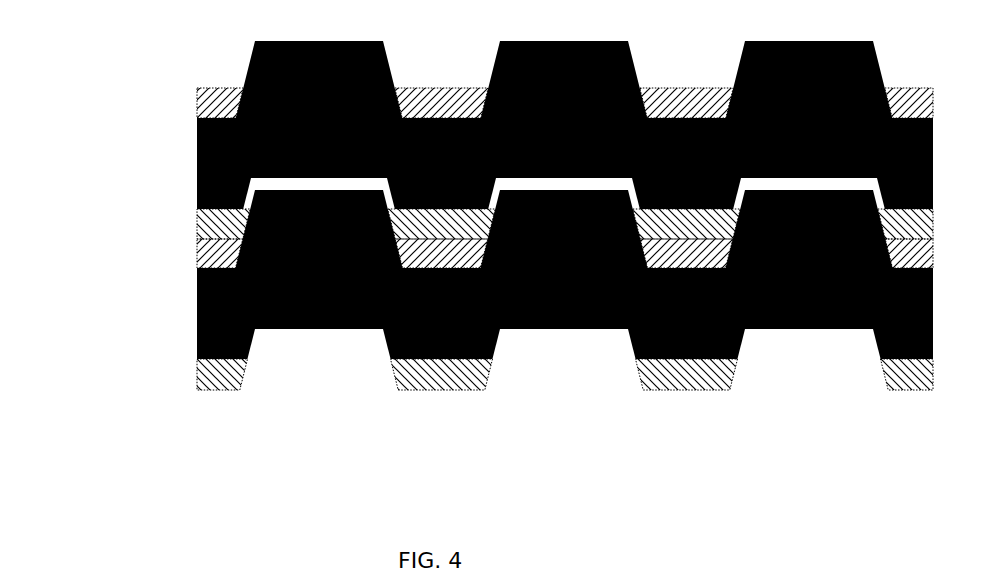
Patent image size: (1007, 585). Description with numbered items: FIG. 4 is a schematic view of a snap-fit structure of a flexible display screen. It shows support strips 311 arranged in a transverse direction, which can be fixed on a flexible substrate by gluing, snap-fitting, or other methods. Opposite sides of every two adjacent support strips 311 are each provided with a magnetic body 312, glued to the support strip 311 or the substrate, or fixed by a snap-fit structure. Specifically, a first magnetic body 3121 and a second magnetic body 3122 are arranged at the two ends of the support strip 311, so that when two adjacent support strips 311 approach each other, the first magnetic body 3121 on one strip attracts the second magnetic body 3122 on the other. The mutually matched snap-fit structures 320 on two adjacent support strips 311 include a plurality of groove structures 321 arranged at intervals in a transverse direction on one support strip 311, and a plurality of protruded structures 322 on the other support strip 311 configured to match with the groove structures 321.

The support strip 311 is at (197, 310).
The magnetic body 312 is at (475, 242).
The first magnetic body 3121 is at (197, 214).
The second magnetic body 3122 is at (197, 258).
The snap-fit structure 320 is at (565, 406).
The groove structure 321 is at (330, 329).
The protruded structure 322 is at (410, 360).